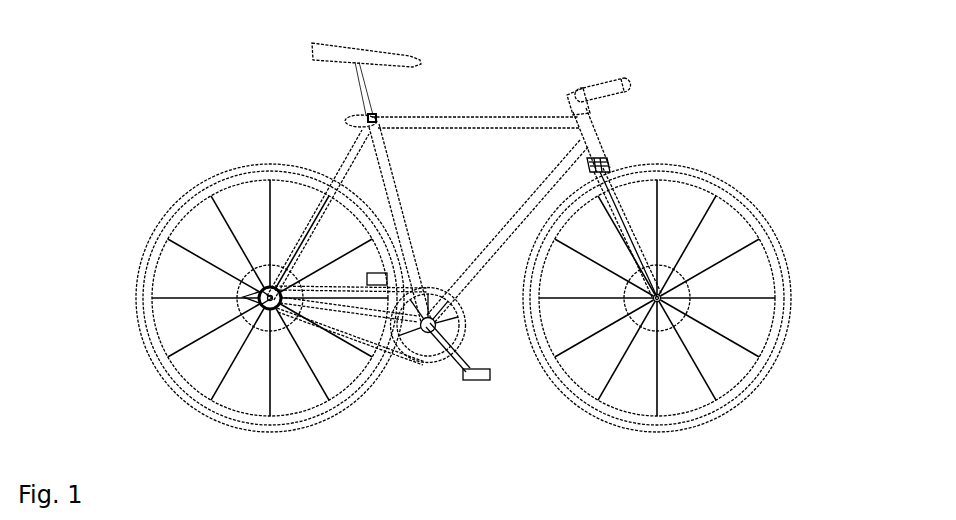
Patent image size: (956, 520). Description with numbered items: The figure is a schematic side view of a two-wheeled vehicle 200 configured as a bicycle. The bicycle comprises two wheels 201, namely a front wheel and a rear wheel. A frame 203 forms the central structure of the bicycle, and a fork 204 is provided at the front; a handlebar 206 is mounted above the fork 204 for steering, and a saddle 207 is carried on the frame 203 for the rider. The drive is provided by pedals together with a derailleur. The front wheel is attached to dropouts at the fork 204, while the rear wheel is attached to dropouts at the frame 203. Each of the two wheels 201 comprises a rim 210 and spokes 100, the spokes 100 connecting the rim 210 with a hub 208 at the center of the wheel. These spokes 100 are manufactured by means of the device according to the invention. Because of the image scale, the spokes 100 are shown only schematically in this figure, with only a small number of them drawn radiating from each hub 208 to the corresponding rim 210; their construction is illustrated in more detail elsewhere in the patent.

The two-wheeled vehicle 200 is at (182, 83).
The frame 203 is at (482, 118).
The saddle 207 is at (343, 56).
The handlebar 206 is at (601, 88).
The fork 204 is at (618, 210).
The wheels 201 is at (168, 220).
The rim 210 is at (160, 255).
The spokes 100 is at (200, 339).
The hub 208 is at (257, 272).